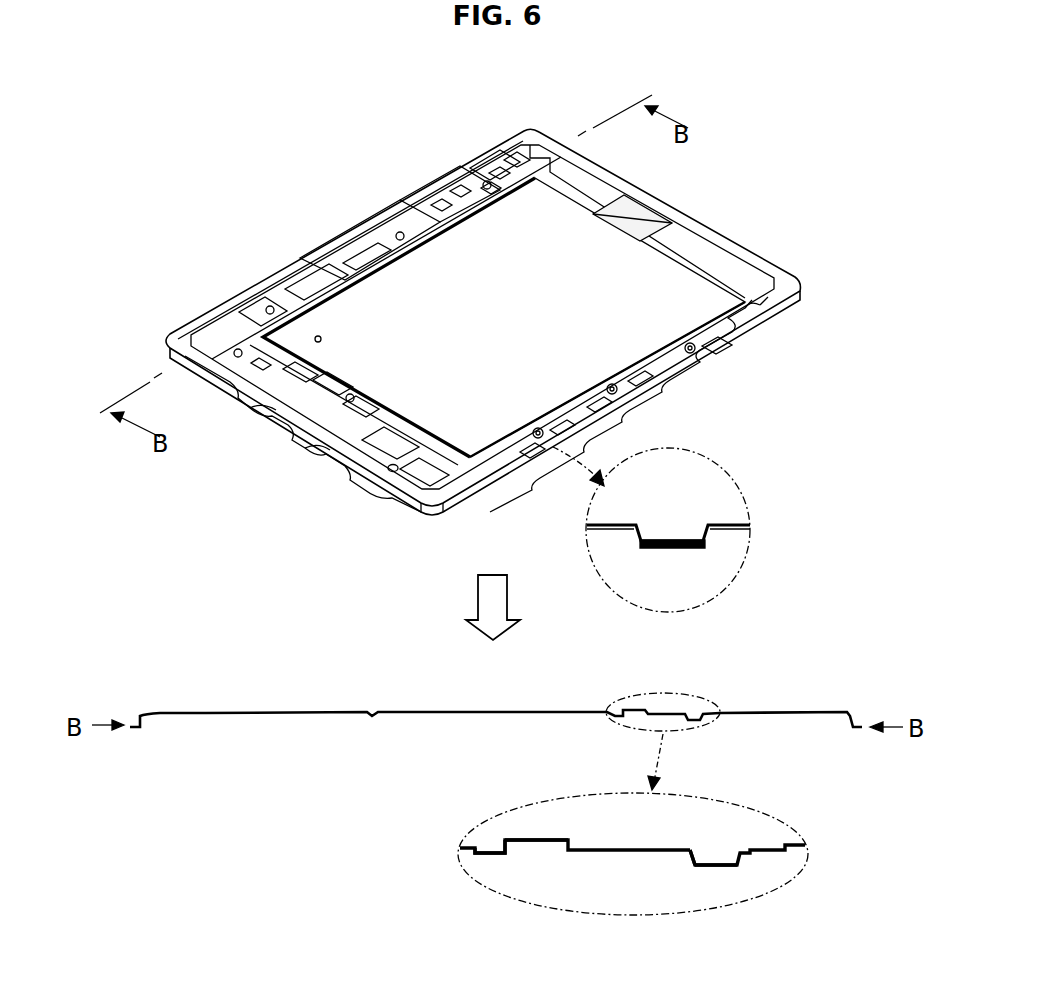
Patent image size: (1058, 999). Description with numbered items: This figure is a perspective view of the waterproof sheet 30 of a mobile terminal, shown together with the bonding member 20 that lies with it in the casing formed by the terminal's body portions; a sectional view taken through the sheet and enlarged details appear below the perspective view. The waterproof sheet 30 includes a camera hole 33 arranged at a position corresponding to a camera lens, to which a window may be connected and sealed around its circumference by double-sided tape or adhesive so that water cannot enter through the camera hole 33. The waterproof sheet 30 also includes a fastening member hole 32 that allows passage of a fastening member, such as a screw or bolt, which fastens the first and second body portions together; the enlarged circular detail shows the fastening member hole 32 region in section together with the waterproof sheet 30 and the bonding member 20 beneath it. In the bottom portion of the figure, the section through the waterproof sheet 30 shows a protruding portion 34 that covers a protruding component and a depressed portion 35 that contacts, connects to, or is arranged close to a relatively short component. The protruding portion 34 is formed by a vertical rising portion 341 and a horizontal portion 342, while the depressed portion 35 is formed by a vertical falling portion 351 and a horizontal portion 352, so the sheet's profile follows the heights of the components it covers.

The bonding member 20 is at (735, 345).
The waterproof sheet 30 is at (725, 222).
The fastening member hole 32 is at (618, 391).
The camera hole 33 is at (318, 336).
The protruding portion 34 is at (535, 851).
The vertical rising portion 341 is at (507, 855).
The horizontal portion 342 is at (537, 840).
The depressed portion 35 is at (718, 860).
The vertical falling portion 351 is at (690, 866).
The horizontal portion 352 is at (716, 868).